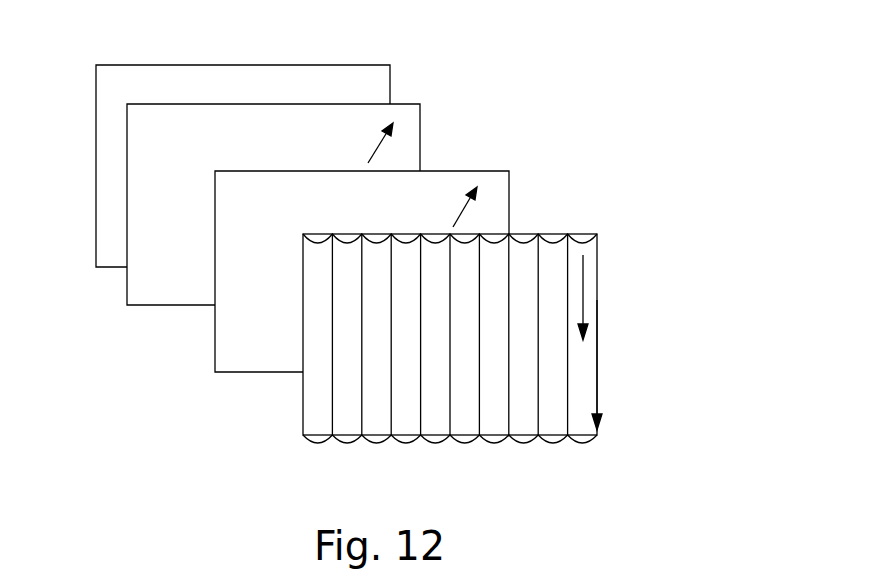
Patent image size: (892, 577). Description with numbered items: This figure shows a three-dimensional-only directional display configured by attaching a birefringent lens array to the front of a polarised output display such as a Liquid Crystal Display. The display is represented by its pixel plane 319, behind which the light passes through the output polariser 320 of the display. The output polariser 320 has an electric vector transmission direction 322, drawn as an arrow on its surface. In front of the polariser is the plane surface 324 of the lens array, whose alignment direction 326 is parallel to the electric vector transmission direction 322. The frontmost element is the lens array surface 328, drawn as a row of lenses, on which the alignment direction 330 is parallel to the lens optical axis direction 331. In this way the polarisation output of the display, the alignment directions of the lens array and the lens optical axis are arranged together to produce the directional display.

The pixel plane 319 is at (373, 78).
The output polariser 320 is at (420, 122).
The electric vector transmission direction 322 is at (378, 153).
The plane surface 324 is at (509, 182).
The alignment direction 326 is at (462, 218).
The lens array surface 328 is at (583, 363).
The alignment direction 330 is at (583, 285).
The lens optical axis direction 331 is at (599, 427).